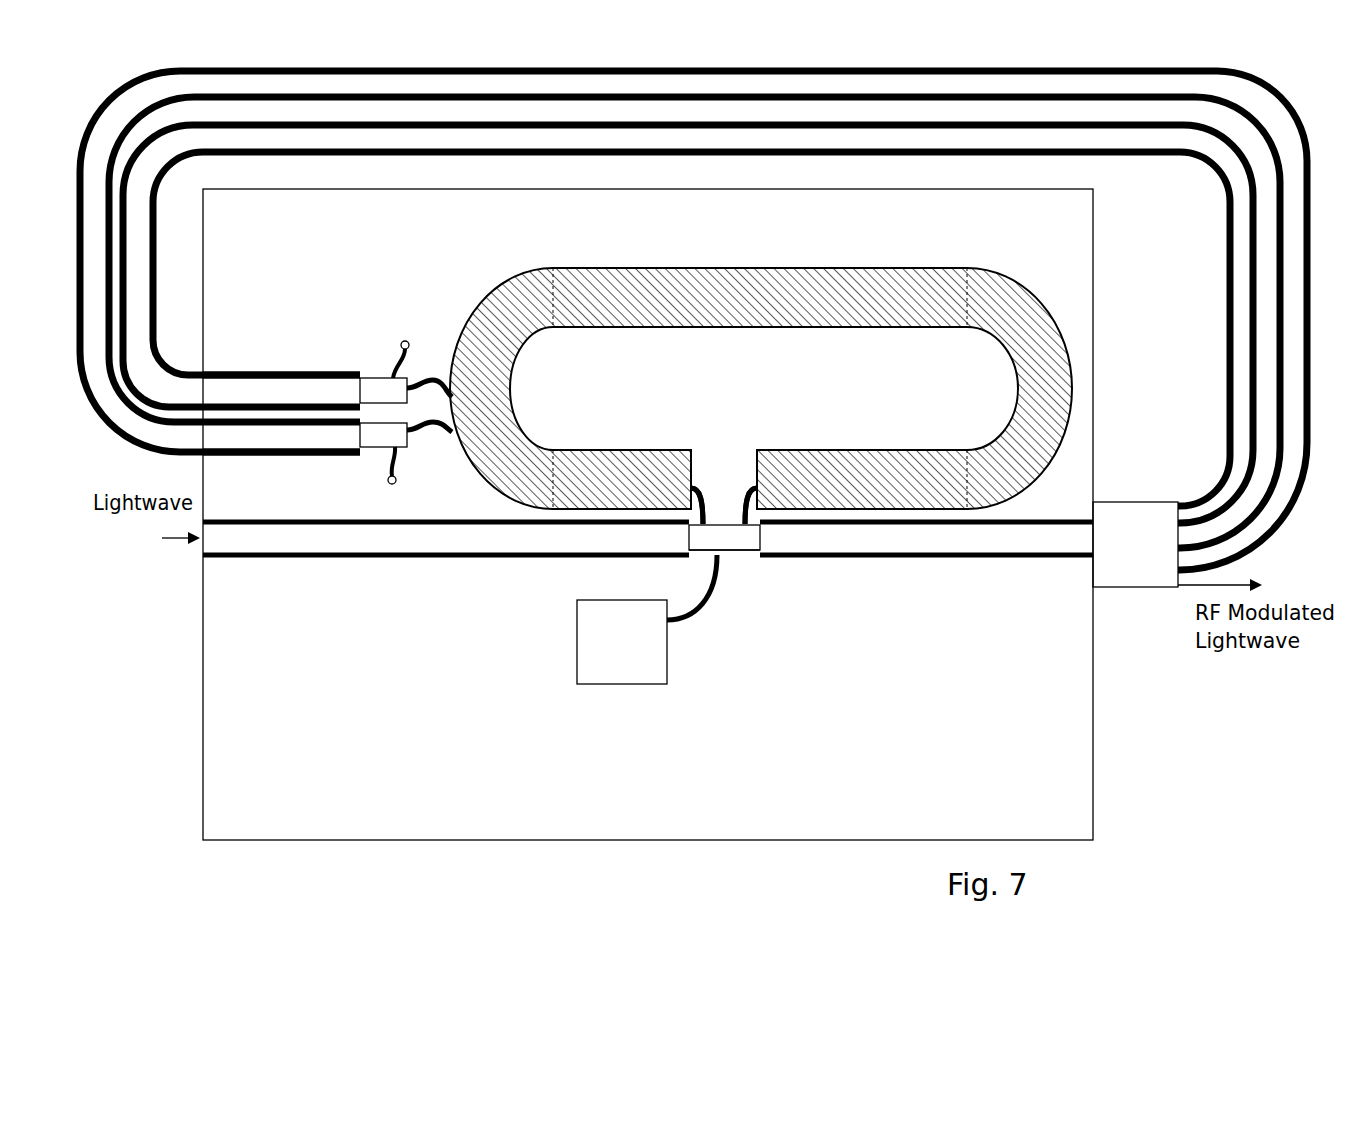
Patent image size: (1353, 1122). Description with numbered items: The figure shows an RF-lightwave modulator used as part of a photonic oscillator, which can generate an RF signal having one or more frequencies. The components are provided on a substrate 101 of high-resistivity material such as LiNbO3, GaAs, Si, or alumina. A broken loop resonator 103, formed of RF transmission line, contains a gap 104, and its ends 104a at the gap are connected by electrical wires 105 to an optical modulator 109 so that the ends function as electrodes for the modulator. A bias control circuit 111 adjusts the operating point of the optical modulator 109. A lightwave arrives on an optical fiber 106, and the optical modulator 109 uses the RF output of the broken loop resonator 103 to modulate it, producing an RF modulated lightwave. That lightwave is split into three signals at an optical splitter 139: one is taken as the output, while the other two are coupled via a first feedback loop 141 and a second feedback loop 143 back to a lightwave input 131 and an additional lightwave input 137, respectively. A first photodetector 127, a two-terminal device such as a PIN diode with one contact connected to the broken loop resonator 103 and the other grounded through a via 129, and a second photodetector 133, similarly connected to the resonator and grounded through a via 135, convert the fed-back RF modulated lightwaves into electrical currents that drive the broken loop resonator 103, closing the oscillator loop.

The substrate 101 is at (1097, 226).
The broken loop resonator 103 is at (824, 267).
The gap 104 is at (728, 468).
The ends 104a is at (693, 468).
The electrical wires 105 is at (745, 522).
The optical fiber 106 is at (403, 558).
The optical modulator 109 is at (742, 557).
The bias control circuit 111 is at (577, 630).
The first photodetector 127 is at (380, 378).
The via 129 is at (403, 340).
The lightwave input 131 is at (240, 374).
The second photodetector 133 is at (378, 448).
The via 135 is at (396, 488).
The additional lightwave input 137 is at (232, 456).
The optical splitter 139 is at (1120, 503).
The first feedback loop 141 is at (1228, 247).
The second feedback loop 143 is at (1010, 70).